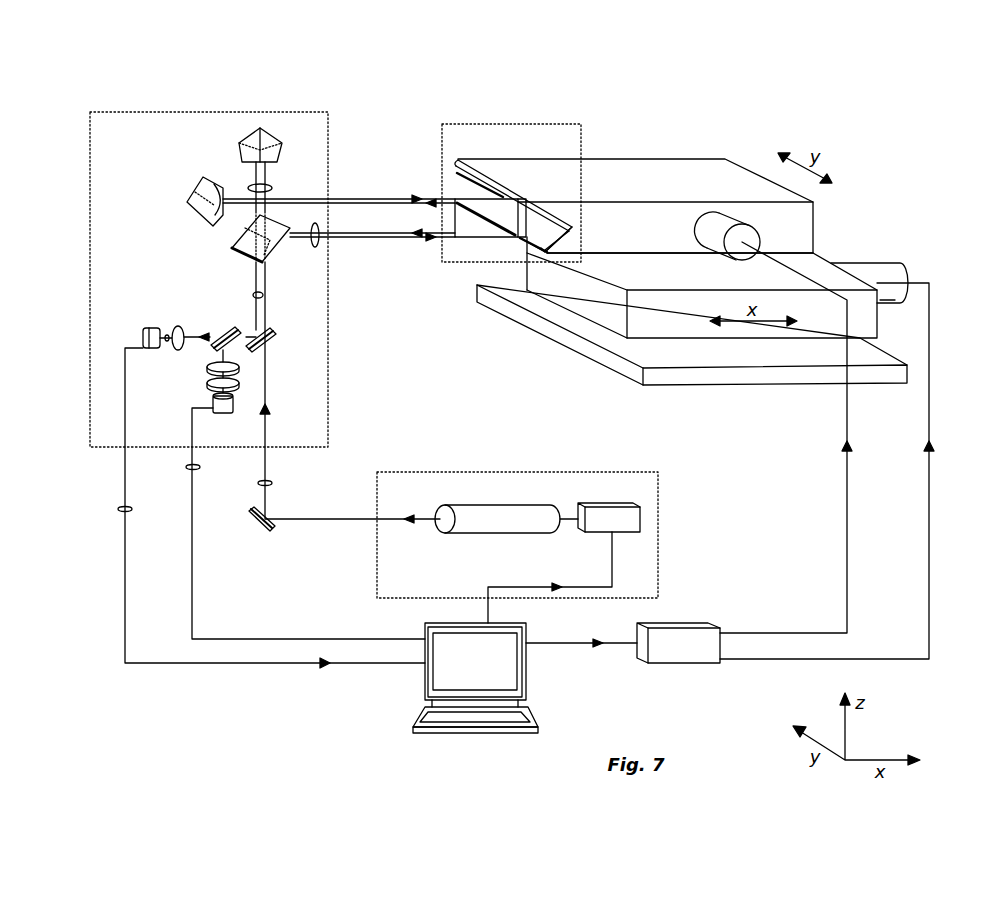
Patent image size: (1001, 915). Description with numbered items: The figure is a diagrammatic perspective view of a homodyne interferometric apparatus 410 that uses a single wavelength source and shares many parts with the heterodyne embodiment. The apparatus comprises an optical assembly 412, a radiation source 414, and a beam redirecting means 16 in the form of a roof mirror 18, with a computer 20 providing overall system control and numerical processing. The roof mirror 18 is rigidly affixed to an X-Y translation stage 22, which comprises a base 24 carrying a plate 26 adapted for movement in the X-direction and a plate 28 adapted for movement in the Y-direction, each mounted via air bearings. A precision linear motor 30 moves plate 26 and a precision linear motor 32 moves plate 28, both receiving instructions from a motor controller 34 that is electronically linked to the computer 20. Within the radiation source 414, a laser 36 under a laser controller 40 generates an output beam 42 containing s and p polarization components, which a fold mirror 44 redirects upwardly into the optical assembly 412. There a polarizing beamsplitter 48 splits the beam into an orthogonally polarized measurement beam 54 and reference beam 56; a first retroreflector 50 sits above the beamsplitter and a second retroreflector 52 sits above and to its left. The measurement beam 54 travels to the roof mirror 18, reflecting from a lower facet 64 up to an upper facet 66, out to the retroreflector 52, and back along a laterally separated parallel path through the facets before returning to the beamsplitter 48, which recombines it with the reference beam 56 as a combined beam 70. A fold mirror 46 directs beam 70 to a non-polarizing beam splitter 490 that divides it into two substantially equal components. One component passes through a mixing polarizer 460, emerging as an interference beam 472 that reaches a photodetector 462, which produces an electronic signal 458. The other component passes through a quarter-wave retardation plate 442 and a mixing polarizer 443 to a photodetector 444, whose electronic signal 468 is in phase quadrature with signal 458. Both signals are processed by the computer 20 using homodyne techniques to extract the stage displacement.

The homodyne interferometric apparatus 410 is at (410, 42).
The optical assembly 412 is at (250, 98).
The radiation source 414 is at (487, 458).
The beam redirecting means 16 is at (484, 108).
The roof mirror 18 is at (500, 178).
The computer 20 is at (425, 677).
The X-Y translation stage 22 is at (665, 145).
The base 24 is at (682, 373).
The plate 26 is at (653, 318).
The plate 28 is at (625, 232).
The precision linear motor 30 is at (881, 263).
The precision linear motor 32 is at (732, 212).
The motor controller 34 is at (677, 623).
The laser 36 is at (475, 507).
The laser controller 40 is at (605, 506).
The beam 42 is at (277, 484).
The fold mirror 44 is at (255, 534).
The fold mirror 46 is at (274, 334).
The polarizing beamsplitter 48 is at (247, 257).
The first retroreflector 50 is at (239, 149).
The second retroreflector 52 is at (188, 191).
The measurement beam 54 is at (315, 247).
The reference beam 56 is at (275, 188).
The lower facet 64 is at (538, 228).
The upper facet 66 is at (472, 178).
The combined beam 70 is at (253, 295).
The quarter-wave retardation plate 442 is at (205, 368).
The mixing polarizer 443 is at (205, 382).
The photodetector 444 is at (212, 398).
The electronic signal 458 is at (122, 509).
The mixing polarizer 460 is at (184, 327).
The photodetector 462 is at (142, 338).
The electronic signal 468 is at (191, 467).
The interference beam 472 is at (167, 334).
The non-polarizing beam splitter 490 is at (228, 331).